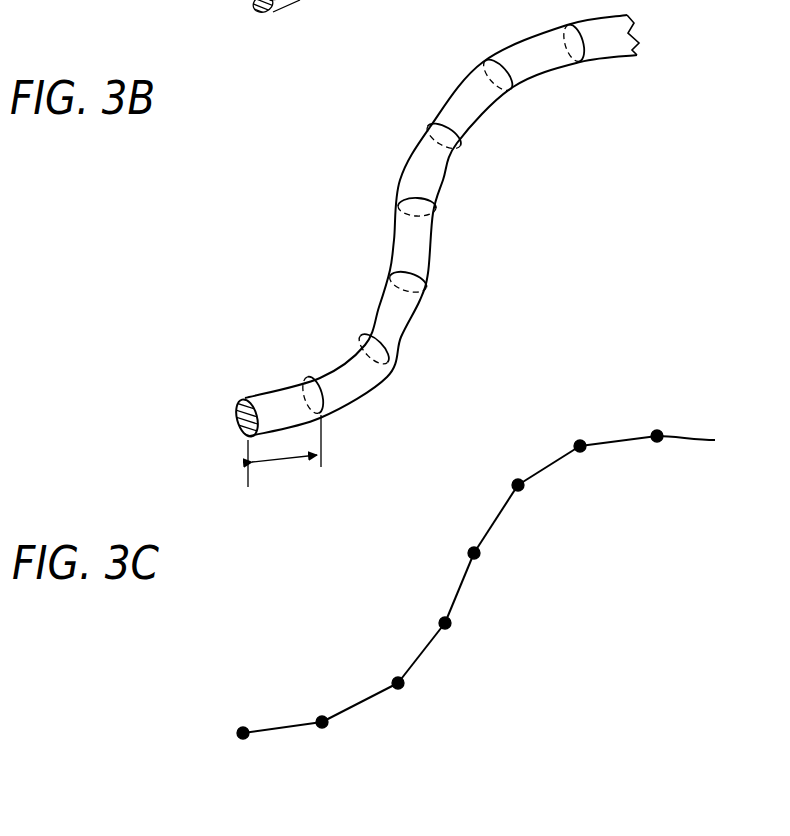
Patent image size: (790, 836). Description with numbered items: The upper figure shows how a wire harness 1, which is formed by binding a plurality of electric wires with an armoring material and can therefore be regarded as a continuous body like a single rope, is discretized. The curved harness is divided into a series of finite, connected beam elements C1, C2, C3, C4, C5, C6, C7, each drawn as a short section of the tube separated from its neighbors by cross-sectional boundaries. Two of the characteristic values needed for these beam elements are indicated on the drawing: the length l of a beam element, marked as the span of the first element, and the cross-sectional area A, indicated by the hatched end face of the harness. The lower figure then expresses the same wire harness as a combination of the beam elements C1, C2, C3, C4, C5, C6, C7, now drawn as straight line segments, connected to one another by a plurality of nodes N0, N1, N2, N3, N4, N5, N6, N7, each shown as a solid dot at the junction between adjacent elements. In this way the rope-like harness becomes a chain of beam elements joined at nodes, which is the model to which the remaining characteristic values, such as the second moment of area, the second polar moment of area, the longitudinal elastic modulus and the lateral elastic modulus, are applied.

In FIG. 3B, the wire harness 1 is at (440, 90).
In FIG. 3B, the cross-sectional area A is at (237, 420).
In FIG. 3B, the beam element C1 is at (278, 400).
In FIG. 3C, the beam element C1 is at (278, 730).
In FIG. 3B, the beam element C2 is at (347, 380).
In FIG. 3C, the beam element C2 is at (362, 707).
In FIG. 3B, the beam element C3 is at (383, 312).
In FIG. 3C, the beam element C3 is at (423, 653).
In FIG. 3B, the beam element C4 is at (422, 250).
In FIG. 3C, the beam element C4 is at (463, 583).
In FIG. 3B, the beam element C5 is at (410, 165).
In FIG. 3C, the beam element C5 is at (497, 522).
In FIG. 3B, the beam element C6 is at (468, 115).
In FIG. 3C, the beam element C6 is at (550, 467).
In FIG. 3B, the beam element C7 is at (530, 53).
In FIG. 3C, the beam element C7 is at (613, 445).
In FIG. 3B, the length l is at (284, 451).
In FIG. 3C, the node N0 is at (238, 727).
In FIG. 3C, the node N1 is at (320, 717).
In FIG. 3C, the node N2 is at (393, 680).
In FIG. 3C, the node N3 is at (438, 620).
In FIG. 3C, the node N4 is at (468, 550).
In FIG. 3C, the node N5 is at (513, 482).
In FIG. 3C, the node N6 is at (575, 443).
In FIG. 3C, the node N7 is at (657, 432).